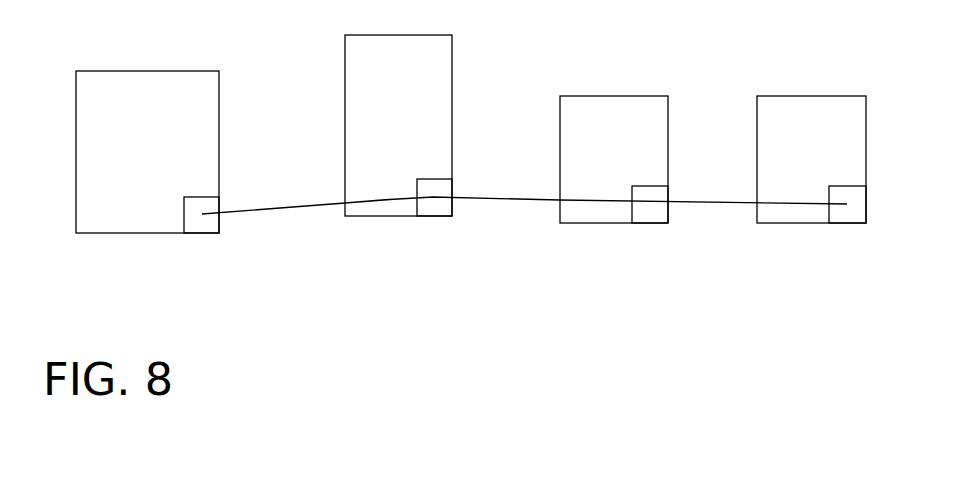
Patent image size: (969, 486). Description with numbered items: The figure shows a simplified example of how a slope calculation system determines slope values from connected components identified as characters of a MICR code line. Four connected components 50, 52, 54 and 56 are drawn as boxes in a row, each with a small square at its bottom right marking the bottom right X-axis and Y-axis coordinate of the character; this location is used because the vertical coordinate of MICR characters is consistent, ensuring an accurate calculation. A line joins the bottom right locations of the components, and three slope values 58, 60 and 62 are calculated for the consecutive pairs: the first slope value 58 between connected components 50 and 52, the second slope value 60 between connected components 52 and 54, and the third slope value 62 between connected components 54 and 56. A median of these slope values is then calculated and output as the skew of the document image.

The connected component 50 is at (114, 104).
The connected component 52 is at (383, 70).
The connected component 54 is at (598, 130).
The connected component 56 is at (795, 130).
The slope value 58 is at (289, 226).
The slope value 60 is at (513, 214).
The slope value 62 is at (703, 238).